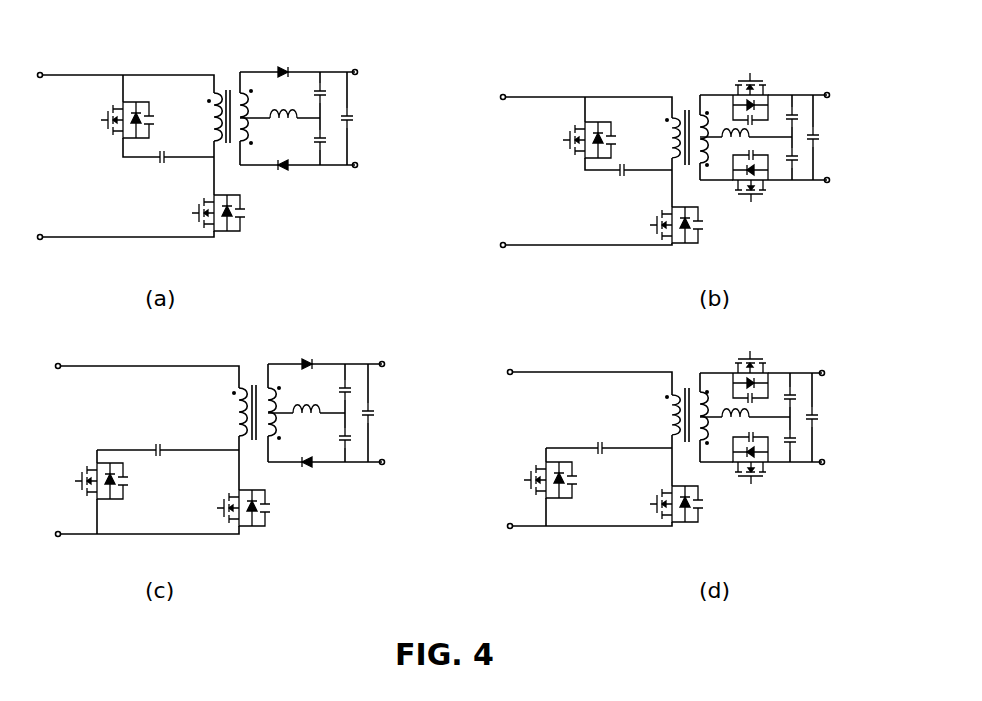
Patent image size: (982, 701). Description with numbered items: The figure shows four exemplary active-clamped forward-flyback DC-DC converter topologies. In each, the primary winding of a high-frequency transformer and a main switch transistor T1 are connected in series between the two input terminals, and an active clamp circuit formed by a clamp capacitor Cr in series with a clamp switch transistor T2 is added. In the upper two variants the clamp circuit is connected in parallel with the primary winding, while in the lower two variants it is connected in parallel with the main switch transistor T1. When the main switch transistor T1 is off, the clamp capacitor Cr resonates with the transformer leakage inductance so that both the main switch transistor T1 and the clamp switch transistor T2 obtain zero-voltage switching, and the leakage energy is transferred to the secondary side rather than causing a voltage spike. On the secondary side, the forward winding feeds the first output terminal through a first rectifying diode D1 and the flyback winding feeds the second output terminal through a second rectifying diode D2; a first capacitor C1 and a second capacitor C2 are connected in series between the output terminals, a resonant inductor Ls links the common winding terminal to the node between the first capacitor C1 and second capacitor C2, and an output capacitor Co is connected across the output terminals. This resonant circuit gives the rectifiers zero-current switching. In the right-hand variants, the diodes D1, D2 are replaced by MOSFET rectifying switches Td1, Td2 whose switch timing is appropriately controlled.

The main switch transistor T1 is at (453, 364).
The clamp switch transistor T2 is at (339, 302).
The clamp capacitor Cr is at (389, 303).
The first rectifying diode D1 is at (295, 211).
The second rectifying diode D2 is at (295, 320).
The first capacitor C1 is at (547, 245).
The second capacitor C2 is at (547, 290).
The resonant inductor Ls is at (509, 271).
The output capacitor Co is at (590, 272).
The MOSFET rectifying switch Td1 is at (750, 232).
The MOSFET rectifying switch Td2 is at (750, 323).